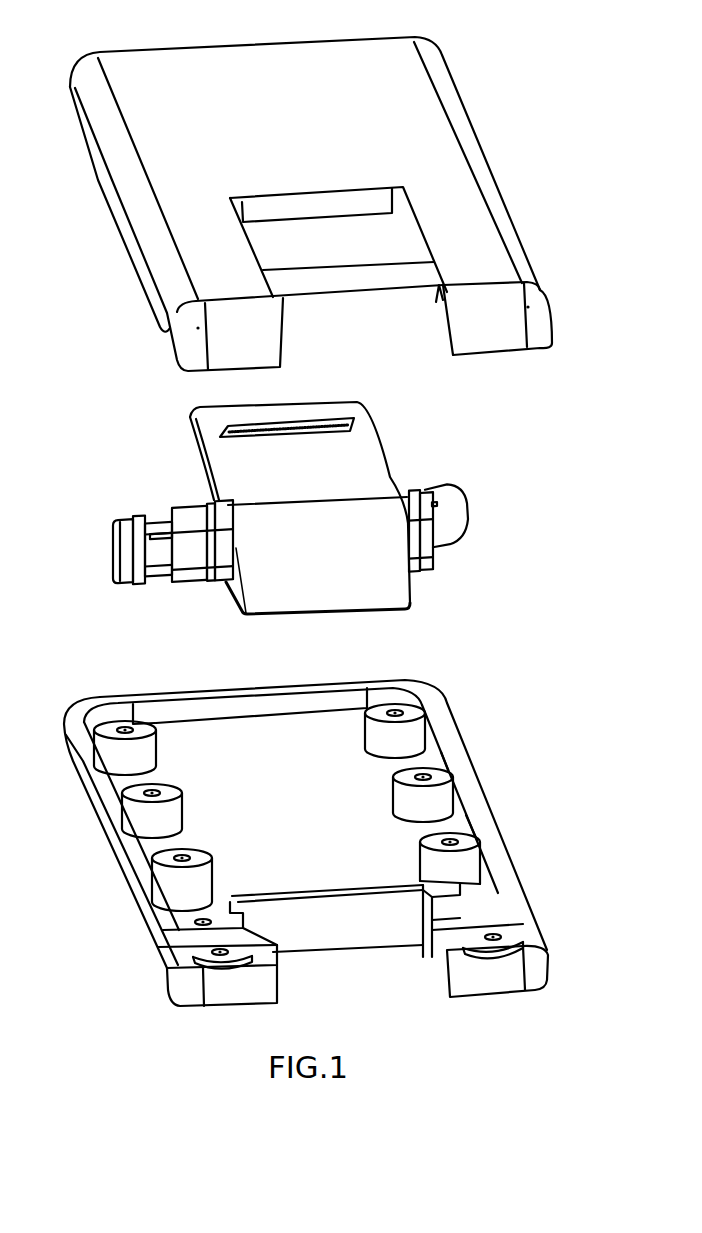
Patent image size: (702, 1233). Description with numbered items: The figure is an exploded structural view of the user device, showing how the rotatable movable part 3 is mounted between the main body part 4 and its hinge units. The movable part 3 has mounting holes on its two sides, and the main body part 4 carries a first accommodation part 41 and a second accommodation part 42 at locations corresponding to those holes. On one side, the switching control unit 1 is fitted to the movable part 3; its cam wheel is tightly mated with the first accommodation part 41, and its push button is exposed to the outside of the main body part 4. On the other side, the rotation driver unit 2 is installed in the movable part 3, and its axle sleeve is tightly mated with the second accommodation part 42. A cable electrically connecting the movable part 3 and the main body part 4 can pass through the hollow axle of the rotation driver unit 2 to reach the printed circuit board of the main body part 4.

The switching control unit 1 is at (165, 512).
The rotation driver unit 2 is at (418, 535).
The movable part 3 is at (332, 560).
The main body part 4 is at (455, 240).
The first accommodation part 41 is at (182, 938).
The second accommodation part 42 is at (453, 928).